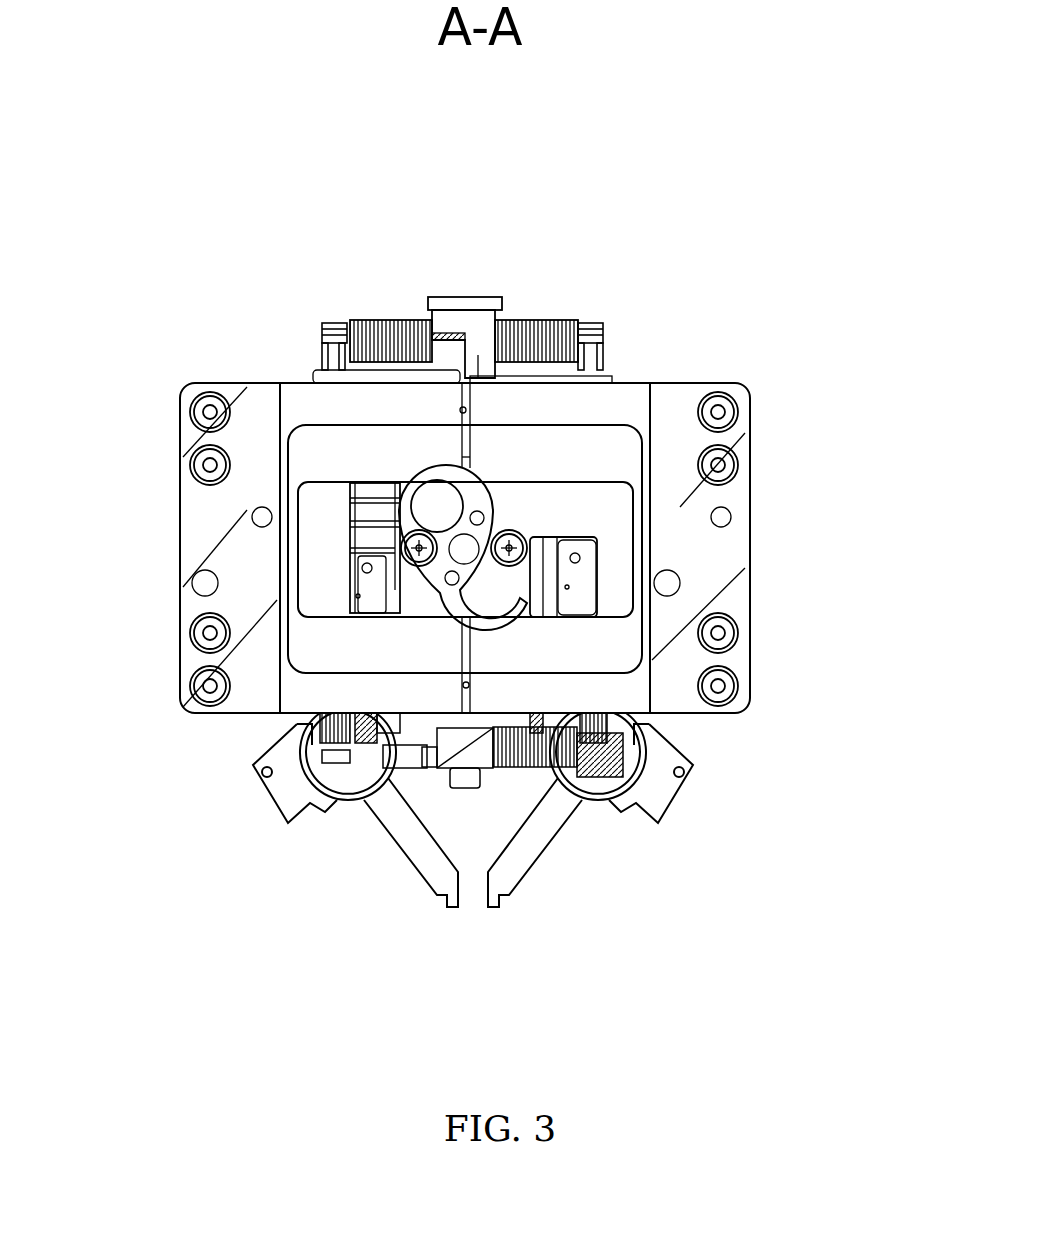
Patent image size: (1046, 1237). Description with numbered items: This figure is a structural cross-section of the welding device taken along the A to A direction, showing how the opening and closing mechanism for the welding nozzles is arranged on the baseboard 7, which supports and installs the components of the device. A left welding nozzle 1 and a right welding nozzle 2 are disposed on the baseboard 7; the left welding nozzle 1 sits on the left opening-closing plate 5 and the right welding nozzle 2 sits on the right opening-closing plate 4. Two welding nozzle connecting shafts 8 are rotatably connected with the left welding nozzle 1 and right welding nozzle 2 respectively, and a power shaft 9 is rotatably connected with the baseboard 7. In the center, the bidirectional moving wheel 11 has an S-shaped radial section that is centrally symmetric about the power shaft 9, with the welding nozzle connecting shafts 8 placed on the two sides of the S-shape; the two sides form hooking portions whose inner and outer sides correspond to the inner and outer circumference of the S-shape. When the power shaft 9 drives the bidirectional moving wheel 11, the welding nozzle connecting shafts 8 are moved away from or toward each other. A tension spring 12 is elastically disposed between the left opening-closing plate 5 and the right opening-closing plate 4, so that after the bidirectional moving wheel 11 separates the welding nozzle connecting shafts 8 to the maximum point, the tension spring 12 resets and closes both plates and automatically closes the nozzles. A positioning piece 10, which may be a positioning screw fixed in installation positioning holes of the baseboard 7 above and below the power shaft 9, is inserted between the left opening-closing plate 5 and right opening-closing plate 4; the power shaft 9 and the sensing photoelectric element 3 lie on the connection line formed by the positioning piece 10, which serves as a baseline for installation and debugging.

The left welding nozzle 1 is at (610, 813).
The right welding nozzle 2 is at (314, 813).
The sensing photoelectric element 3 is at (500, 240).
The right opening-closing plate 4 is at (355, 467).
The left opening-closing plate 5 is at (597, 437).
The baseboard 7 is at (550, 541).
The welding nozzle connecting shaft 8 is at (286, 412).
The power shaft 9 is at (465, 549).
The positioning piece 10 is at (920, 685).
The bidirectional moving wheel 11 is at (571, 378).
The tension spring 12 is at (461, 236).